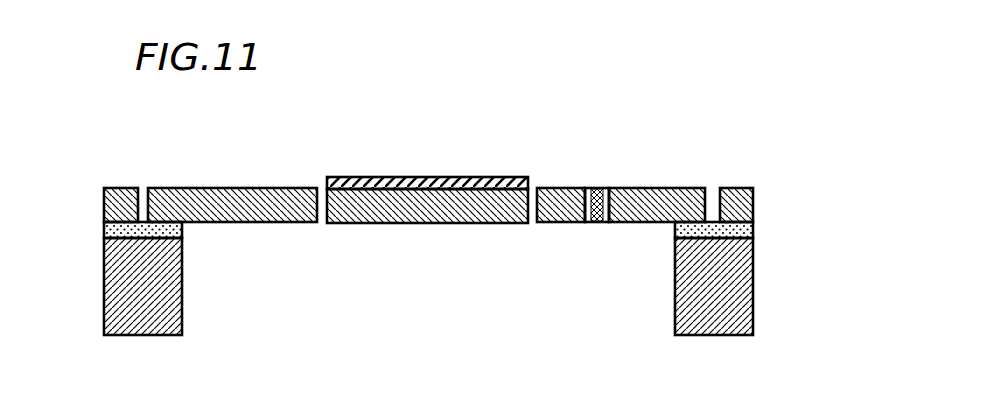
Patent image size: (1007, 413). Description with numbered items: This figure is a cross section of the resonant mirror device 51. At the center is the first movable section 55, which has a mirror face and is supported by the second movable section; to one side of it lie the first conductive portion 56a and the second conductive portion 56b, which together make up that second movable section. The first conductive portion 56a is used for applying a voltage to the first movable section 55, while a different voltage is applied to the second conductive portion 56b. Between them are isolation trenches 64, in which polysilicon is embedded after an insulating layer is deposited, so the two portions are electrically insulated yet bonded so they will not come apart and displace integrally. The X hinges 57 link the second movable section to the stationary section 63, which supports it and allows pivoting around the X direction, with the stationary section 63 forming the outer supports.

The resonant mirror device 51 is at (452, 91).
The first movable section 55 is at (513, 177).
The first conductive portion 56a is at (666, 188).
The second conductive portion 56b is at (572, 188).
The X hinges 57 is at (702, 188).
The stationary section 63 is at (730, 291).
The isolation trenches 64 is at (602, 188).